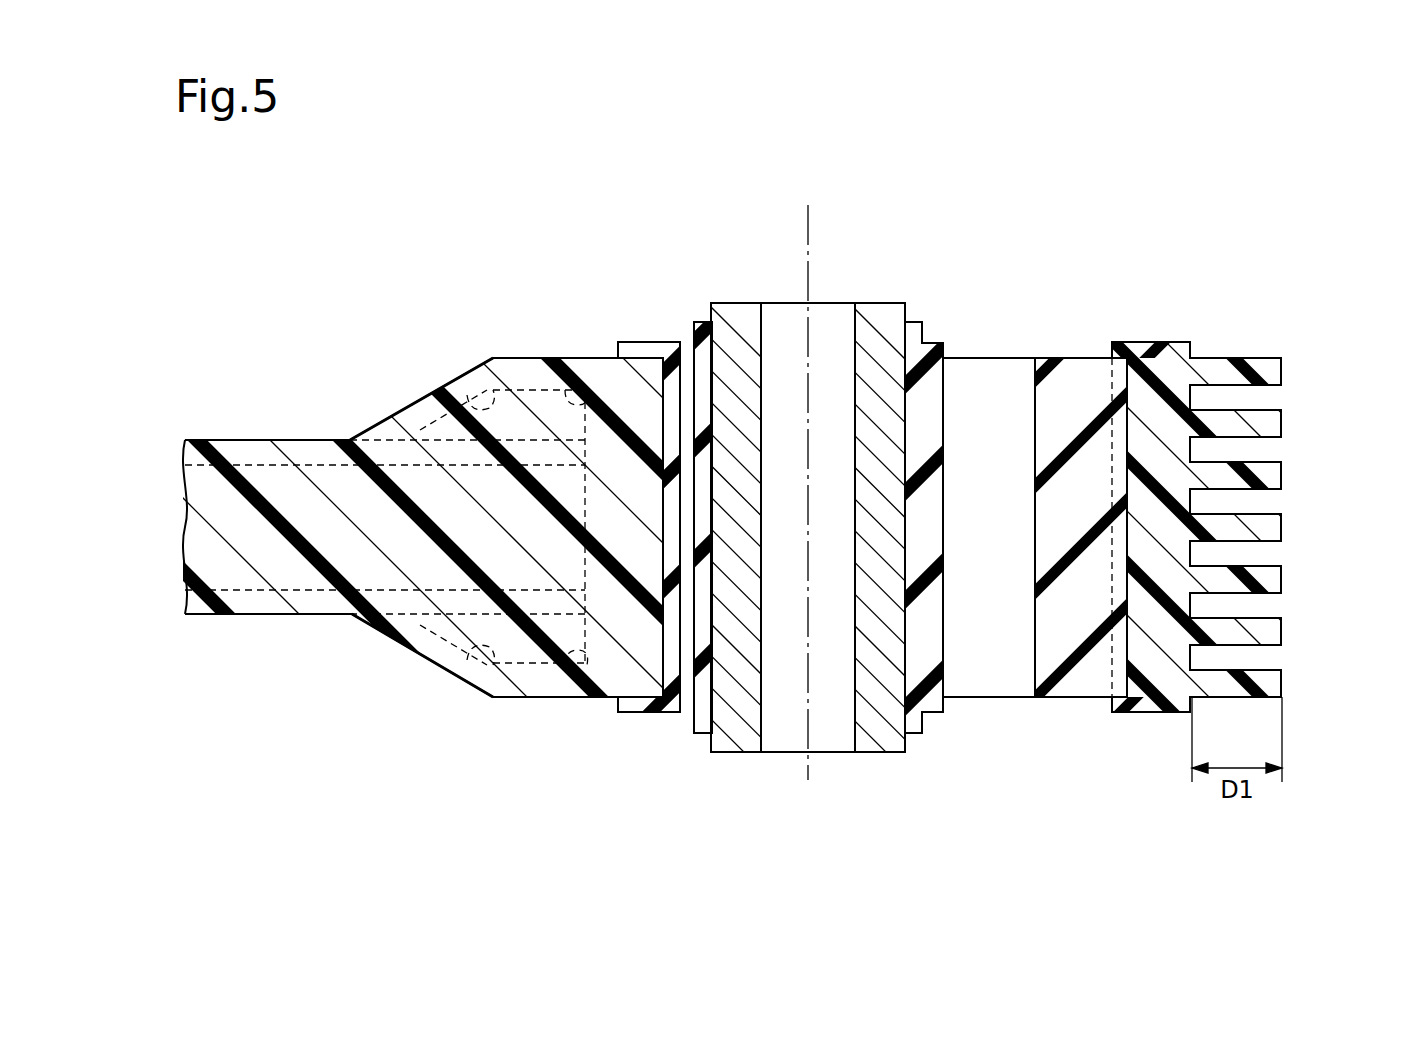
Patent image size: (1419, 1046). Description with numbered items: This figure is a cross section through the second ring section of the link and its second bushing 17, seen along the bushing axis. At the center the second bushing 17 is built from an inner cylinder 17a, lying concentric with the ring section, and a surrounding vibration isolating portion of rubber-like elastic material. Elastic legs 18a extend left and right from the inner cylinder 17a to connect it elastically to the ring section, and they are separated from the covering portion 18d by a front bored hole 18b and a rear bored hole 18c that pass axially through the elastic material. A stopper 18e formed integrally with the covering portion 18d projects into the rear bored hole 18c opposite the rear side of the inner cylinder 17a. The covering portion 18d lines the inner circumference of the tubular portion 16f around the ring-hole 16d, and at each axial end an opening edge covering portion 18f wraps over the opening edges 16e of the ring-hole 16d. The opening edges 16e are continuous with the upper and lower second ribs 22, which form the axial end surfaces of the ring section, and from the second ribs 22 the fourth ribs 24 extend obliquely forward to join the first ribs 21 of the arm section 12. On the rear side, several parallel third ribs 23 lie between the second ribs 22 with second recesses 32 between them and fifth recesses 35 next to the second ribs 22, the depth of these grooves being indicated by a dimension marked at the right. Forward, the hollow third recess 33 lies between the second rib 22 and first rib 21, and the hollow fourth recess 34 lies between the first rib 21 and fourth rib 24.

The arm section 12 is at (213, 550).
The ring-hole 16d is at (665, 516).
The opening edge 16e is at (638, 358).
The tubular portion 16f is at (1143, 560).
The second bushing 17 is at (1118, 332).
The inner cylinder 17a is at (880, 318).
The elastic leg 18a is at (925, 345).
The front bored hole 18b is at (702, 735).
The rear bored hole 18c is at (1003, 358).
The covering portion 18d is at (673, 393).
The stopper 18e is at (1080, 375).
The opening edge covering portion 18f is at (653, 347).
The first rib 21 is at (232, 440).
The second rib 22 is at (552, 355).
The third rib 23 is at (1276, 423).
The fourth rib 24 is at (395, 415).
The second recess 32 is at (1276, 450).
The third recess 33 is at (587, 385).
The fourth recess 34 is at (480, 392).
The fifth recess 35 is at (1272, 395).